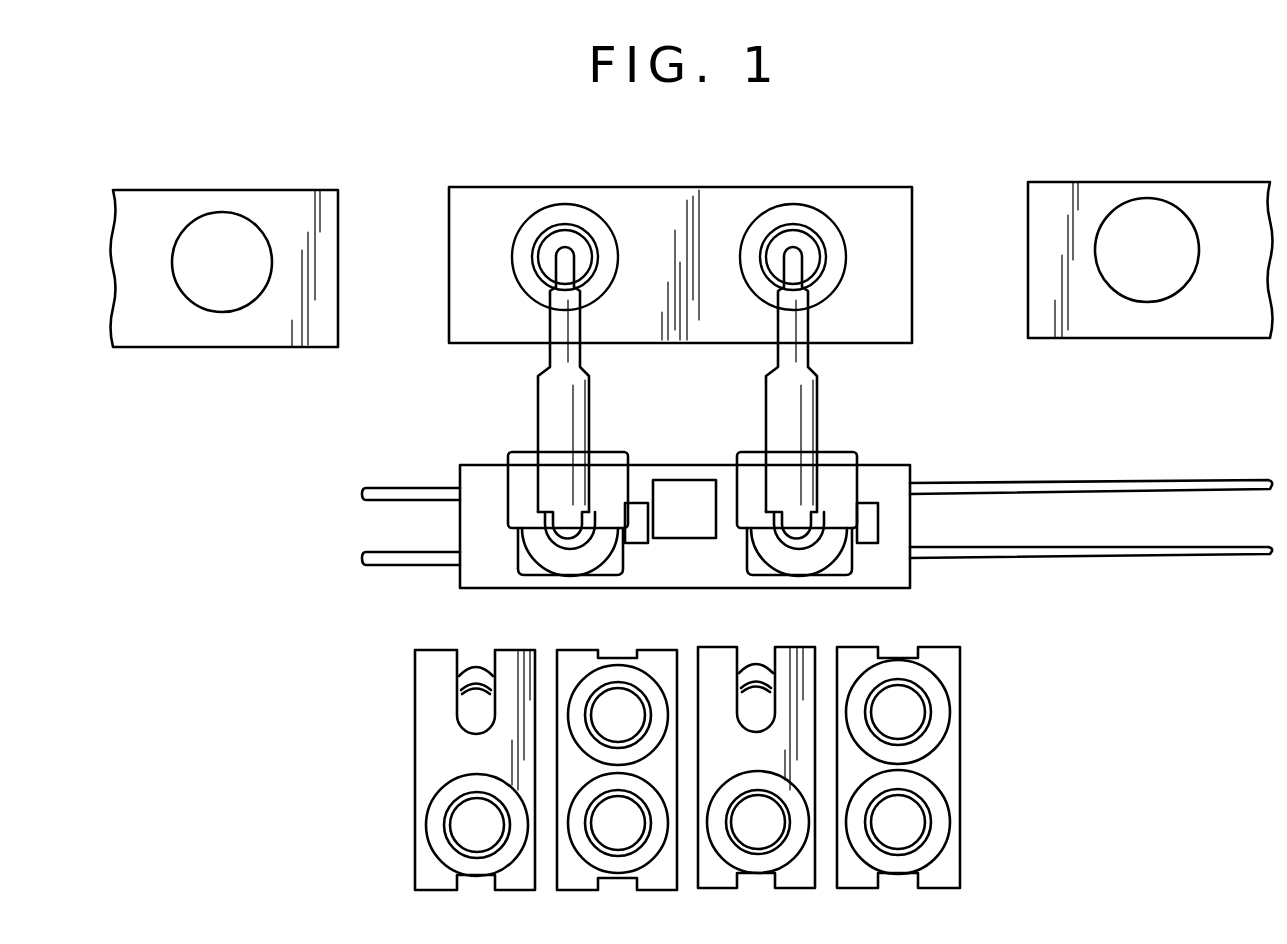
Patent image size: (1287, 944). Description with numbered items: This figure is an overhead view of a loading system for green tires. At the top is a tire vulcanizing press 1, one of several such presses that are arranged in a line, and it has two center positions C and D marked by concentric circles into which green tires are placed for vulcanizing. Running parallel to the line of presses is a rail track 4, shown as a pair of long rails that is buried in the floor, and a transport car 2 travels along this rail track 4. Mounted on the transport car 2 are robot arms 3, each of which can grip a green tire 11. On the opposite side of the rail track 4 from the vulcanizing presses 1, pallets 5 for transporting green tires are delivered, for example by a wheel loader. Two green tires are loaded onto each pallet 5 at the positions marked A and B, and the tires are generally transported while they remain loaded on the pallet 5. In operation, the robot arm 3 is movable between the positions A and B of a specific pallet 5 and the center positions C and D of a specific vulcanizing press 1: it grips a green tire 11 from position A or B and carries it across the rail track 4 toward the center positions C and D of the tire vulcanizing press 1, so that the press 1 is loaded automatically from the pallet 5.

The tire vulcanizing press 1 is at (792, 130).
The transport car 2 is at (895, 466).
The robot arm 3 is at (522, 458).
The rail track 4 is at (1064, 487).
The pallet 5 is at (963, 762).
The green tire 11 is at (932, 684).
The position A is at (476, 718).
The position B is at (477, 825).
The center position C is at (805, 254).
The center position D is at (556, 254).